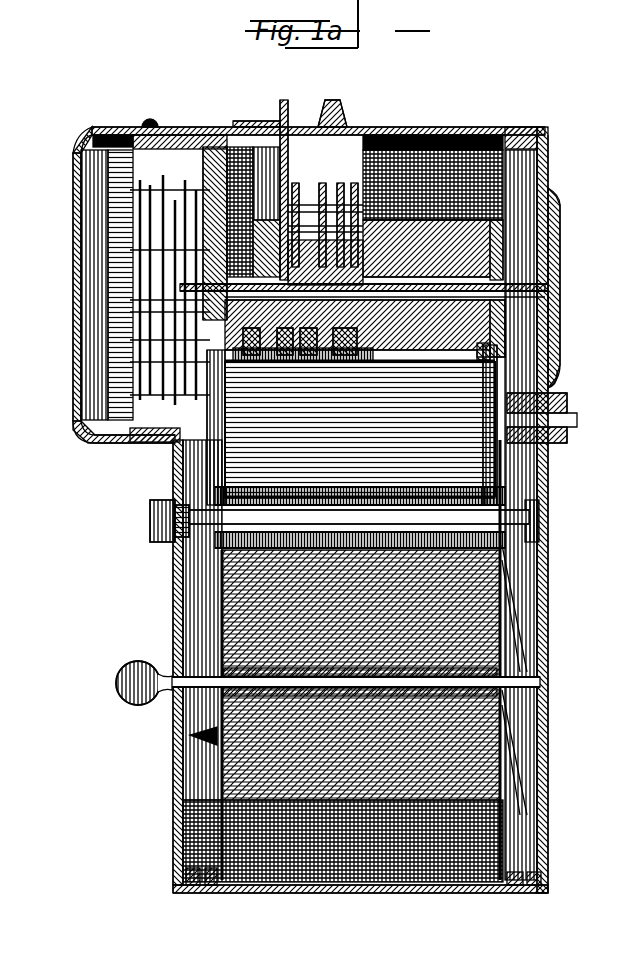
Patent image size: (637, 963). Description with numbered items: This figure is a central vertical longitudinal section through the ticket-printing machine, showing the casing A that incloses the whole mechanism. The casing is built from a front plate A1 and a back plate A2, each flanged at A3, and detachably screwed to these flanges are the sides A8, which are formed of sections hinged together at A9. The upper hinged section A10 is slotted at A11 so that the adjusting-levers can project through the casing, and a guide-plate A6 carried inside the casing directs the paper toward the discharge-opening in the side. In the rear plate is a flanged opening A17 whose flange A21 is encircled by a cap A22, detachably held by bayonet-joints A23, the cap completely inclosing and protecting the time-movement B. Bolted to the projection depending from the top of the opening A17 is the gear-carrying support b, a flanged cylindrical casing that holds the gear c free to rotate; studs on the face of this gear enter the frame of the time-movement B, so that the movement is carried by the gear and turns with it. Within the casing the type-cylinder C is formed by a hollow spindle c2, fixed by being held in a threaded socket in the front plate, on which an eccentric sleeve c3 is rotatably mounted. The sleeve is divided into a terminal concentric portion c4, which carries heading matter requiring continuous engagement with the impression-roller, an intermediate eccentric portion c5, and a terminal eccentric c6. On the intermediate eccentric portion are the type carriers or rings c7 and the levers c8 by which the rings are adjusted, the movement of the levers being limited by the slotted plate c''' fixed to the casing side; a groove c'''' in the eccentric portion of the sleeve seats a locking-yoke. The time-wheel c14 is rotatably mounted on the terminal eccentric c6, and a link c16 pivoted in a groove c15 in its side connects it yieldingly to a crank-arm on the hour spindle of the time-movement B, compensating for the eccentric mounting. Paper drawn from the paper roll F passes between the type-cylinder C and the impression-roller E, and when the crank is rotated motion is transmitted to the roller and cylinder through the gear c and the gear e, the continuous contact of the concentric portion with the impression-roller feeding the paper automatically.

The casing A is at (130, 521).
The front plate A1 is at (548, 562).
The back plate A2 is at (173, 565).
The flanges A3 is at (520, 128).
The guide-plate A6 is at (500, 500).
The sides A8 is at (390, 895).
The hinges A9 is at (262, 895).
The upper hinged section A10 is at (452, 128).
The slot A11 is at (290, 128).
The flanged opening A17 is at (95, 442).
The flange A21 is at (135, 458).
The cap A22 is at (78, 418).
The bayonet-joints A23 is at (152, 125).
The time-movement B is at (140, 275).
The type-cylinder C is at (497, 250).
The impression-roller E is at (360, 429).
The paper roll F is at (505, 600).
The gear a is at (241, 236).
The gear-carrying support b is at (262, 127).
The gear c is at (476, 515).
The hollow spindle c2 is at (548, 292).
The eccentric sleeve c3 is at (520, 300).
The concentric portion c4 is at (365, 330).
The intermediate eccentric portion c5 is at (300, 333).
The terminal eccentric c6 is at (255, 356).
The type carriers or rings c7 is at (292, 356).
The levers c8 is at (345, 190).
The time-wheel c14 is at (247, 365).
The groove c15 is at (200, 330).
The link c16 is at (150, 256).
The slotted plate c''' is at (342, 106).
The groove c'''' is at (282, 370).
The gear e is at (515, 390).